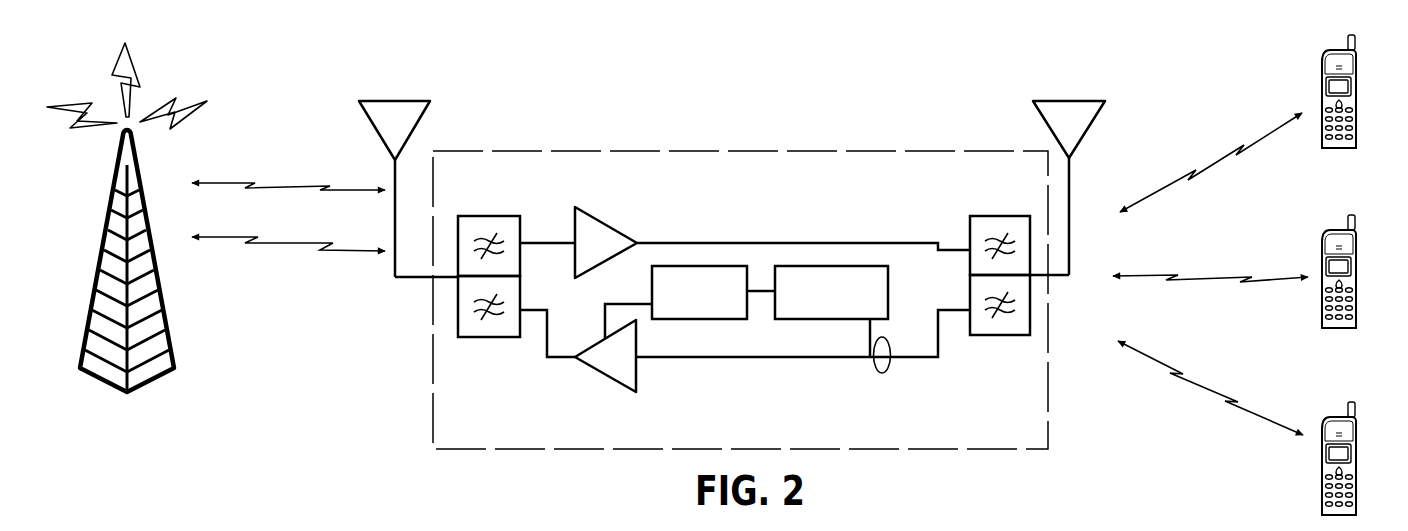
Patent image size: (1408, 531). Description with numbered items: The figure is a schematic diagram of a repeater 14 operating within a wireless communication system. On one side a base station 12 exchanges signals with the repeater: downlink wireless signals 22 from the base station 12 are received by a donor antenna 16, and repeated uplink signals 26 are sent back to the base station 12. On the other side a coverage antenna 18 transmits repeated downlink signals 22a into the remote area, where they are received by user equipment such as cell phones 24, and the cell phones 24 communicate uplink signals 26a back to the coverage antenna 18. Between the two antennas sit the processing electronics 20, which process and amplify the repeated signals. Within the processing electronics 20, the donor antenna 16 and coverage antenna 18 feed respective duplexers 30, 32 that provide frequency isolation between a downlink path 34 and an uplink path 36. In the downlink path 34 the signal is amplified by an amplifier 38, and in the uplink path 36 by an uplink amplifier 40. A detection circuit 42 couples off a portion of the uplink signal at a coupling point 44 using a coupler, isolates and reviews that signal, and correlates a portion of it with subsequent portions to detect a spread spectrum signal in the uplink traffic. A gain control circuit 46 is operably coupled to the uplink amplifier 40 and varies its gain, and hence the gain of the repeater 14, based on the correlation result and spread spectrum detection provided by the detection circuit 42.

The base station 12 is at (143, 186).
The repeater 14 is at (880, 100).
The donor antenna 16 is at (418, 121).
The coverage antenna 18 is at (1071, 100).
The processing electronics 20 is at (667, 151).
The downlink wireless signals 22 is at (294, 248).
The repeated downlink signals 22a is at (1225, 156).
The cell phones 24 is at (1356, 96).
The repeated uplink signals 26 is at (294, 187).
The uplink signals 26a is at (1195, 278).
The duplexer 30 is at (500, 216).
The duplexer 32 is at (990, 216).
The downlink path 34 is at (760, 243).
The uplink path 36 is at (746, 358).
The amplifier 38 is at (608, 222).
The uplink amplifier 40 is at (638, 371).
The detection circuit 42 is at (790, 320).
The coupling point 44 is at (885, 373).
The gain control circuit 46 is at (697, 320).